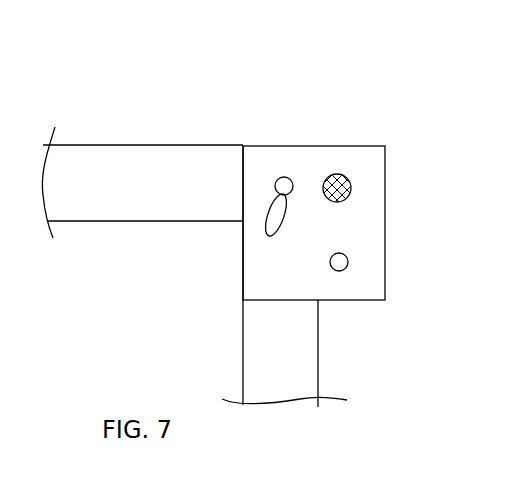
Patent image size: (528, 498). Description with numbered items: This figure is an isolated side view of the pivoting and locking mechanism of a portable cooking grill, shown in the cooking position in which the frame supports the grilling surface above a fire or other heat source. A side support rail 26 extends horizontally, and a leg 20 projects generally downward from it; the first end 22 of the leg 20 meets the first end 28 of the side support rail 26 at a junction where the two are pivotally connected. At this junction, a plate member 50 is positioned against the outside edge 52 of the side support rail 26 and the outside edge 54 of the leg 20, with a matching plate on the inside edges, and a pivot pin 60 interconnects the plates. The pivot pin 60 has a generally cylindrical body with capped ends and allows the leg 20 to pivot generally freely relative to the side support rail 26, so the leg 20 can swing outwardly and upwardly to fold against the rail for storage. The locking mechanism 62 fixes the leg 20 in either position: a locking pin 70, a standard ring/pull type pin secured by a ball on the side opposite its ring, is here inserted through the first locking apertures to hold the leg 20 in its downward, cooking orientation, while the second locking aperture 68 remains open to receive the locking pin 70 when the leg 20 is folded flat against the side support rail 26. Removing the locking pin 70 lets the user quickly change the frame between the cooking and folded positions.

The leg 20 is at (232, 337).
The first end 22 is at (343, 325).
The side support rail 26 is at (79, 138).
The first end 28 is at (229, 136).
The plate member 50 is at (283, 265).
The outside edge 52 is at (116, 168).
The outside edge 54 is at (300, 378).
The pivot pin 60 is at (348, 197).
The locking mechanism 62 is at (402, 146).
The second locking aperture 68 is at (341, 262).
The locking pin 70 is at (284, 184).